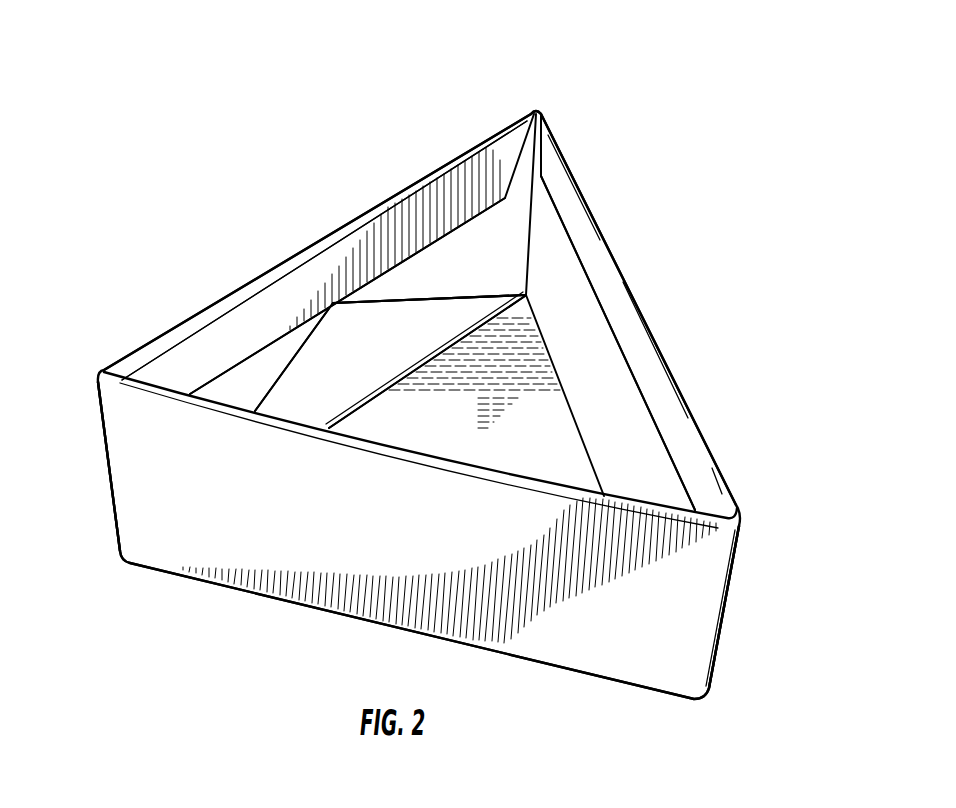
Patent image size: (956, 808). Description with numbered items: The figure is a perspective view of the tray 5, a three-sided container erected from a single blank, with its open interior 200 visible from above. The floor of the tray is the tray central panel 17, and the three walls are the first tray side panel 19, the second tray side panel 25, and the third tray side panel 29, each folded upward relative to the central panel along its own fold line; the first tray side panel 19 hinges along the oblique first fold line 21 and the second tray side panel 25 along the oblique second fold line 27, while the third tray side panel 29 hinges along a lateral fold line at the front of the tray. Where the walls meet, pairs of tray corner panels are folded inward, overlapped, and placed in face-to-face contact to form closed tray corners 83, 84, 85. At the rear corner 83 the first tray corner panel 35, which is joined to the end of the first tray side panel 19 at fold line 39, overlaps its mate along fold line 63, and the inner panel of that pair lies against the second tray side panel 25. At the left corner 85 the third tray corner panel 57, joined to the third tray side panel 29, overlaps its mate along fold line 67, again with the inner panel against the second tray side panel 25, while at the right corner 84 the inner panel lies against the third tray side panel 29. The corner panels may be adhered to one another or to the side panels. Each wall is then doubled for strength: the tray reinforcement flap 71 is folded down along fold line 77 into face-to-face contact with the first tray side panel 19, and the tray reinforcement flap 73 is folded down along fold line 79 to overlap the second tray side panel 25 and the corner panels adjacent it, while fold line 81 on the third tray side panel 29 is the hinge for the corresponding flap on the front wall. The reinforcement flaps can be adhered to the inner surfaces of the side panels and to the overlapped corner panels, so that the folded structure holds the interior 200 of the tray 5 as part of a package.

The tray 5 is at (722, 312).
The tray central panel 17 is at (480, 446).
The first tray side panel 19 is at (594, 391).
The first fold line 21 is at (567, 395).
The second tray side panel 25 is at (370, 346).
The second fold line 27 is at (386, 392).
The third tray side panel 29 is at (447, 549).
The first tray corner panel 35 is at (497, 256).
The fold line 39 is at (532, 208).
The third tray corner panel 57 is at (228, 387).
The fold line 63 is at (460, 301).
The fold line 67 is at (274, 385).
The tray reinforcement flap 71 is at (610, 287).
The tray reinforcement flap 73 is at (243, 307).
The fold line 77 is at (611, 228).
The fold line 79 is at (352, 208).
The fold line 81 is at (278, 427).
The closed tray corner 83 is at (537, 94).
The closed tray corner 84 is at (733, 635).
The closed tray corner 85 is at (86, 460).
The interior 200 is at (327, 250).